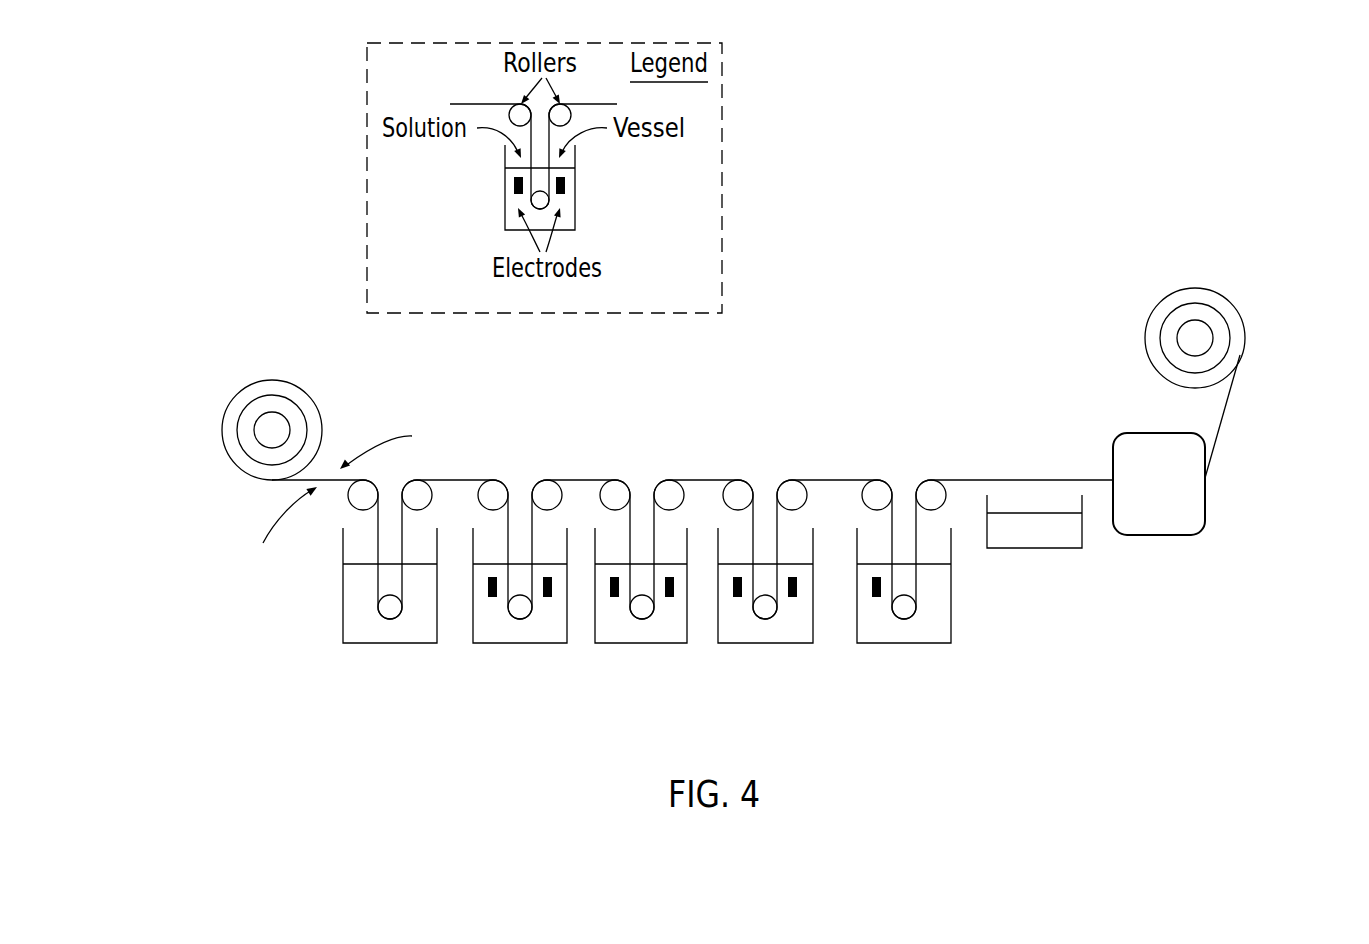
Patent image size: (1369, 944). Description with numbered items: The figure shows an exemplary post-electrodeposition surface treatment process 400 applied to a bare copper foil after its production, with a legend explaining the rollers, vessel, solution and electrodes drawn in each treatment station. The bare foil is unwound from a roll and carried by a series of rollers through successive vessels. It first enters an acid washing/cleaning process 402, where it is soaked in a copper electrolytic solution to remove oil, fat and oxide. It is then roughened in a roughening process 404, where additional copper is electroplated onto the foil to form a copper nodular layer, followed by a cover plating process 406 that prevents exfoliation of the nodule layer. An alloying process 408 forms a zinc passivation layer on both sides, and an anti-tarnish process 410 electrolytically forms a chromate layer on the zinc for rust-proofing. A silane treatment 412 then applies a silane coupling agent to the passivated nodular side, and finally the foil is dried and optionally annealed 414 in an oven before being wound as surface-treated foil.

The post-electrodeposition surface treatment process 400 is at (1197, 735).
The acid washing/cleaning process 402 is at (402, 643).
The roughening process 404 is at (532, 643).
The cover plating process 406 is at (654, 643).
The alloying process 408 is at (777, 643).
The anti-tarnish process 410 is at (917, 643).
The silane treatment 412 is at (1013, 549).
The drying and annealing 414 is at (1113, 434).